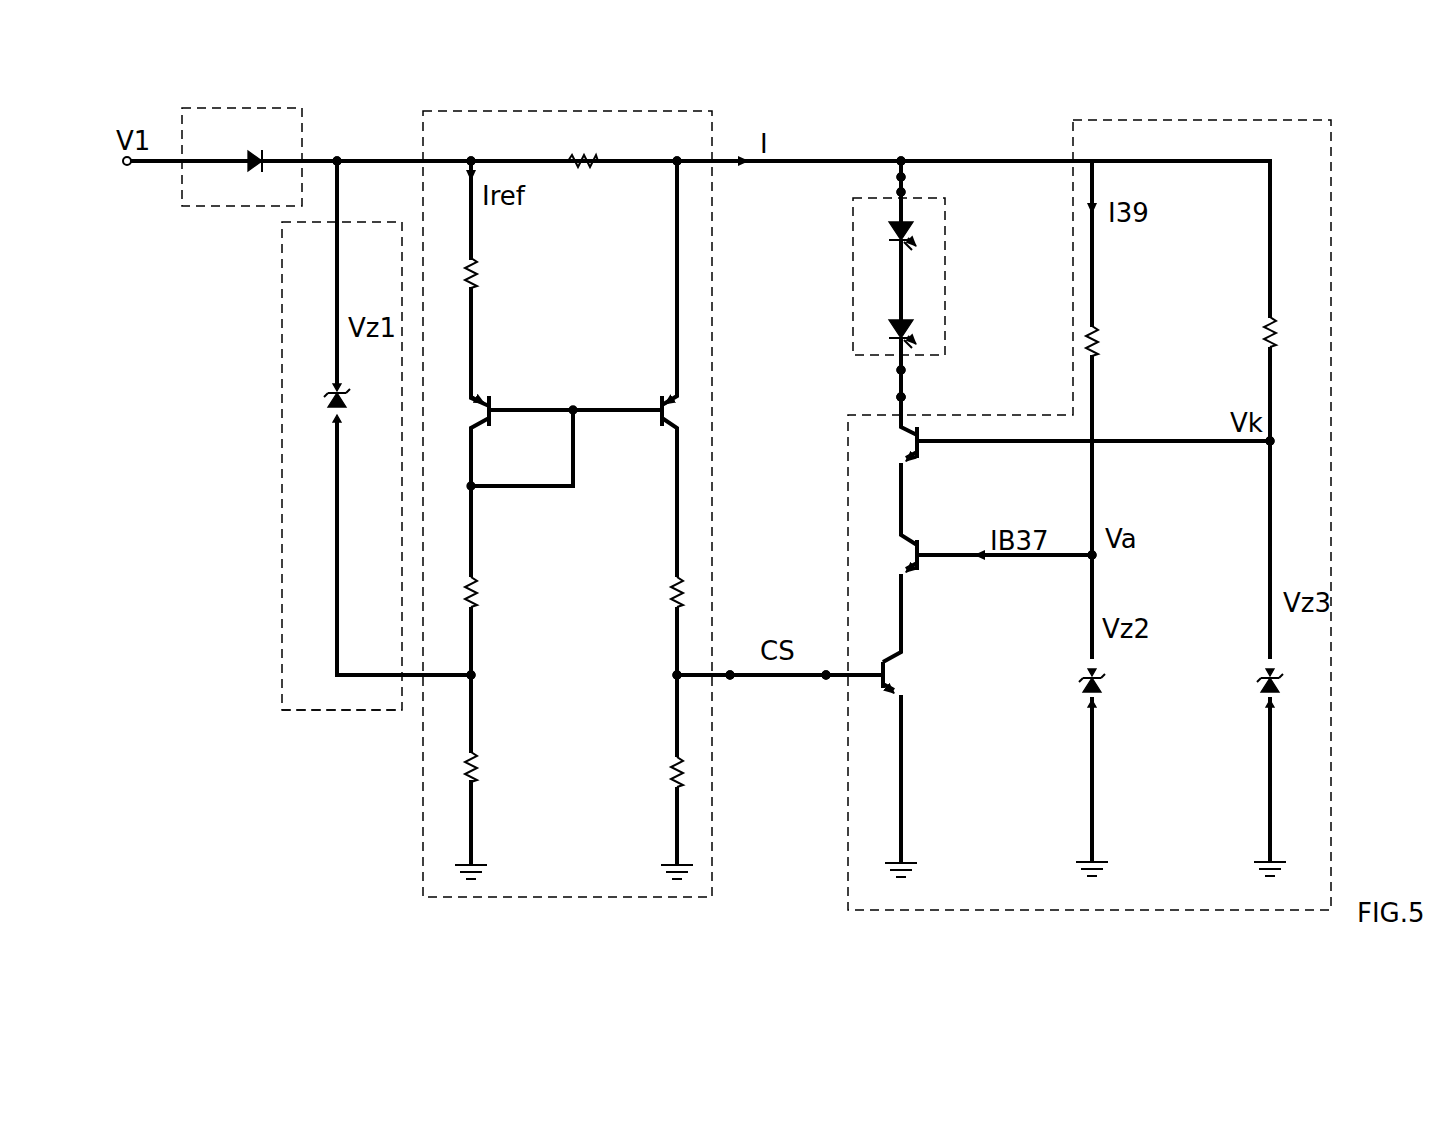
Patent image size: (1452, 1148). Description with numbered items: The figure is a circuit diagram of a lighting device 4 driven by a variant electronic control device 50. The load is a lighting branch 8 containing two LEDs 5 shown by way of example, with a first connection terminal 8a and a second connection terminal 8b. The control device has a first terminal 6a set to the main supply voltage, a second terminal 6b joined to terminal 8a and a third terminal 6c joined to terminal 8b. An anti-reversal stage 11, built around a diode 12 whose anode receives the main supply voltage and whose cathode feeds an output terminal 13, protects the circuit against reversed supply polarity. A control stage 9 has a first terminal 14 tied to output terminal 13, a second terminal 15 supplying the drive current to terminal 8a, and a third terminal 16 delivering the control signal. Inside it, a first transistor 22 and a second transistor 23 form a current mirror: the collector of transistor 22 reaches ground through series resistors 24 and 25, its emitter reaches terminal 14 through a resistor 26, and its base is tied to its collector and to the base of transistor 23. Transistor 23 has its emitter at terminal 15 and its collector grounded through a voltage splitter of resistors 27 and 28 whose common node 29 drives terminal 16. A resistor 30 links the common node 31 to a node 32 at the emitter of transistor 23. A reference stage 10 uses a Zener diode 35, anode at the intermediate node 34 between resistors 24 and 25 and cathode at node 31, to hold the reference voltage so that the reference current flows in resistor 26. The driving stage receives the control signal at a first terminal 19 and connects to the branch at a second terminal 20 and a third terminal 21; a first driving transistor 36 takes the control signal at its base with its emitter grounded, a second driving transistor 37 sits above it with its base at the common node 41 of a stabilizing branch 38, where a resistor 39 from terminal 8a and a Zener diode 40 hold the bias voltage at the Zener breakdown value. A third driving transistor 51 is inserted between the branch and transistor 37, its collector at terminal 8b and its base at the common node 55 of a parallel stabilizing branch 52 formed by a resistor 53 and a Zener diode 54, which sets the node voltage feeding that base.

The lighting device 4 is at (293, 788).
The LED 5 is at (915, 230).
The first terminal 6a is at (128, 170).
The second terminal 6b is at (905, 175).
The third terminal 6c is at (898, 397).
The lighting branch 8 is at (898, 268).
The first connection terminal 8a is at (905, 193).
The second connection terminal 8b is at (905, 370).
The control stage 9 is at (712, 133).
The generator stage of the reference electrical quantity 10 is at (282, 478).
The anti-reversal stage 11 is at (280, 108).
The diode 12 is at (252, 174).
The output terminal 13 is at (337, 158).
The first terminal 14 is at (402, 160).
The second terminal 15 is at (724, 165).
The third terminal 16 is at (730, 680).
The first terminal 19 is at (826, 680).
The second terminal 20 is at (895, 162).
The third terminal 21 is at (903, 405).
The first transistor 22 is at (490, 394).
The second transistor 23 is at (658, 395).
The resistor 24 is at (480, 592).
The resistor 25 is at (480, 768).
The resistor 26 is at (478, 272).
The resistor 27 is at (670, 595).
The resistor 28 is at (670, 772).
The common node 29 is at (670, 675).
The resistor 30 is at (578, 166).
The common node 31 is at (471, 158).
The node 32 is at (676, 166).
The intermediate connection node 34 is at (480, 675).
The Zener diode 35 is at (328, 401).
The first driving transistor 36 is at (911, 689).
The second driving transistor 37 is at (922, 586).
The stabilizing branch 38 is at (1112, 403).
The resistor 39 is at (1098, 341).
The Zener diode 40 is at (1100, 689).
The common node 41 is at (1095, 560).
The electronic control device 50 is at (238, 286).
The third driving transistor 51 is at (924, 461).
The stabilizing branch 52 is at (1288, 386).
The resistor 53 is at (1263, 332).
The Zener diode 54 is at (1278, 690).
The common node 55 is at (1273, 446).